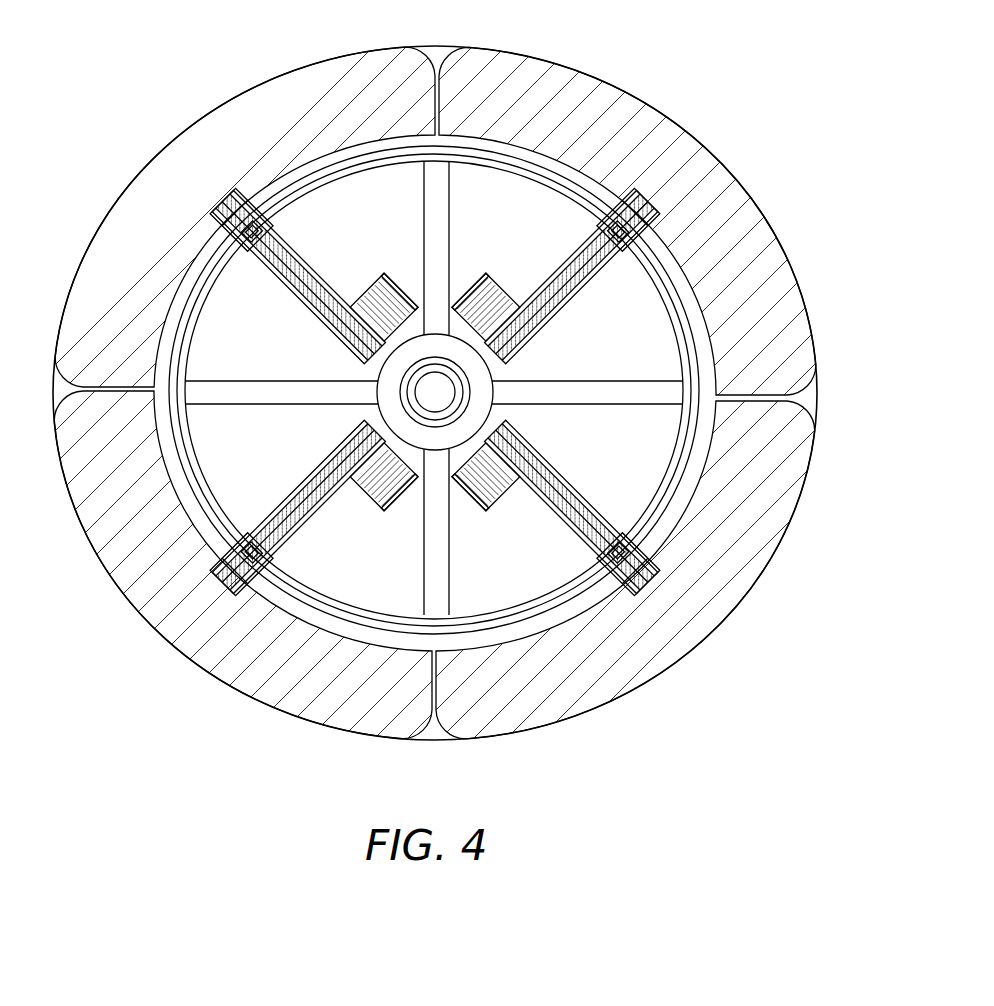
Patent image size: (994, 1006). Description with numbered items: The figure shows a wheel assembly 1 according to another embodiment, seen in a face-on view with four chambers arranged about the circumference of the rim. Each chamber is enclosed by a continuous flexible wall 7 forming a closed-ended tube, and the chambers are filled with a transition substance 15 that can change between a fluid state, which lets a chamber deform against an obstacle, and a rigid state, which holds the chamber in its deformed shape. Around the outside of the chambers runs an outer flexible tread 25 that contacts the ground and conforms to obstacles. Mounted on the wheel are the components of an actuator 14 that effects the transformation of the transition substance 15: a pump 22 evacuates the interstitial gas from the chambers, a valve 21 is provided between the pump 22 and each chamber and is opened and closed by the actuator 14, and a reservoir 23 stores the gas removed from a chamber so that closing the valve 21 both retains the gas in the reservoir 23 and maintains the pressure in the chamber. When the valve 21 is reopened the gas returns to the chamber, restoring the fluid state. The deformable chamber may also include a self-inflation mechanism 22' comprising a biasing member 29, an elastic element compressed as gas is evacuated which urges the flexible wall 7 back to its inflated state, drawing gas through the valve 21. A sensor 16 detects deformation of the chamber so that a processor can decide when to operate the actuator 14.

The wheel assembly 1 is at (697, 58).
The flexible wall 7 is at (103, 243).
The transition substance 15 is at (197, 162).
The actuator 14 is at (320, 260).
The sensor 16 is at (272, 206).
The valve 21 is at (243, 262).
The pump 22 is at (435, 390).
The self-inflation mechanism 22' is at (433, 390).
The reservoir 23 is at (302, 307).
The outer flexible tread 25 is at (432, 746).
The biasing member 29 is at (283, 303).